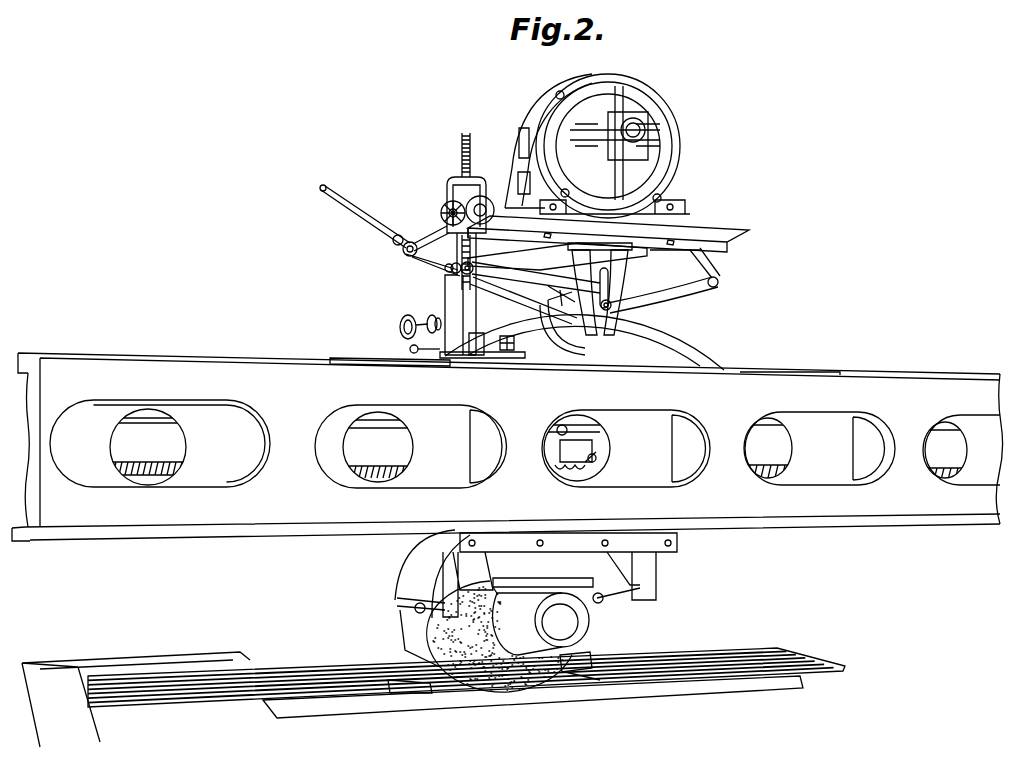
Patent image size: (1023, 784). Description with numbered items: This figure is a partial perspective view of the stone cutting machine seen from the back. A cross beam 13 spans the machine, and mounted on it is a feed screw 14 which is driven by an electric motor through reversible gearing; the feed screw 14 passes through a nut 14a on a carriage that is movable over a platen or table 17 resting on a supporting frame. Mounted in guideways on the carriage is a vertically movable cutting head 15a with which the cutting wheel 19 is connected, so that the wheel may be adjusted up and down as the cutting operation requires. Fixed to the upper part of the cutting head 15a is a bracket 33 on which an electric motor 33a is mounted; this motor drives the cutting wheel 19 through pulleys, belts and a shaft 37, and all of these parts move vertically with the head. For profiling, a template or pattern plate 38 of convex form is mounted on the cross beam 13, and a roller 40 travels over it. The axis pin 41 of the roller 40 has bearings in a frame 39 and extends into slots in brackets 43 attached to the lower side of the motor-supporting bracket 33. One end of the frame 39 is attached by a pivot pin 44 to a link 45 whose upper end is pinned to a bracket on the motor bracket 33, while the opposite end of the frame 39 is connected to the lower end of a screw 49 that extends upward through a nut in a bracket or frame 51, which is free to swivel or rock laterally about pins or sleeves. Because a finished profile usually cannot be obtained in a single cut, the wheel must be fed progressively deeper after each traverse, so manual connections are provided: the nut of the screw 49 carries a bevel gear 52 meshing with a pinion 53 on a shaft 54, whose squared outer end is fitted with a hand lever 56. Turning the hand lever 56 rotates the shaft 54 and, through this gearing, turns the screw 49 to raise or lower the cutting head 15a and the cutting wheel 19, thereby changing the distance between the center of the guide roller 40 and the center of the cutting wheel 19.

The cross beam 13 is at (897, 385).
The feed screw 14 is at (145, 463).
The nut 14a is at (592, 463).
The cutting head 15a is at (485, 302).
The platen or table 17 is at (177, 667).
The cutting wheel 19 is at (518, 673).
The bracket 33 is at (727, 241).
The electric motor 33a is at (664, 108).
The shaft 37 is at (578, 627).
The template or pattern plate 38 is at (677, 355).
The frame 39 is at (690, 285).
The roller 40 is at (577, 325).
The axis pin 41 is at (615, 307).
The brackets 43 is at (580, 278).
The pivot pin 44 is at (718, 280).
The link 45 is at (710, 264).
The screw 49 is at (468, 134).
The bracket or frame 51 is at (460, 178).
The bevel gear 52 is at (447, 200).
The pinion 53 is at (446, 217).
The shaft 54 is at (428, 236).
The hand lever 56 is at (343, 198).